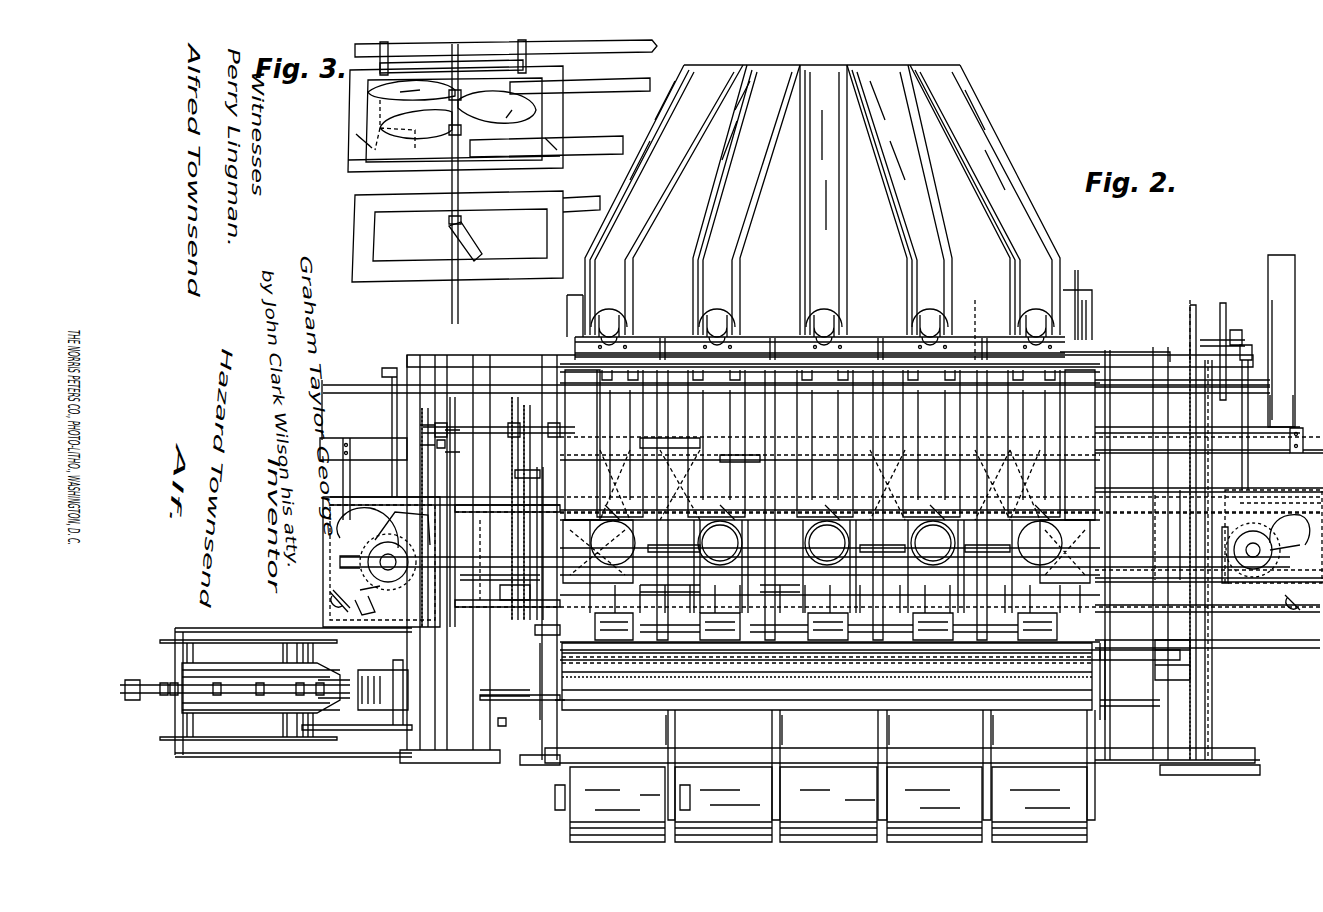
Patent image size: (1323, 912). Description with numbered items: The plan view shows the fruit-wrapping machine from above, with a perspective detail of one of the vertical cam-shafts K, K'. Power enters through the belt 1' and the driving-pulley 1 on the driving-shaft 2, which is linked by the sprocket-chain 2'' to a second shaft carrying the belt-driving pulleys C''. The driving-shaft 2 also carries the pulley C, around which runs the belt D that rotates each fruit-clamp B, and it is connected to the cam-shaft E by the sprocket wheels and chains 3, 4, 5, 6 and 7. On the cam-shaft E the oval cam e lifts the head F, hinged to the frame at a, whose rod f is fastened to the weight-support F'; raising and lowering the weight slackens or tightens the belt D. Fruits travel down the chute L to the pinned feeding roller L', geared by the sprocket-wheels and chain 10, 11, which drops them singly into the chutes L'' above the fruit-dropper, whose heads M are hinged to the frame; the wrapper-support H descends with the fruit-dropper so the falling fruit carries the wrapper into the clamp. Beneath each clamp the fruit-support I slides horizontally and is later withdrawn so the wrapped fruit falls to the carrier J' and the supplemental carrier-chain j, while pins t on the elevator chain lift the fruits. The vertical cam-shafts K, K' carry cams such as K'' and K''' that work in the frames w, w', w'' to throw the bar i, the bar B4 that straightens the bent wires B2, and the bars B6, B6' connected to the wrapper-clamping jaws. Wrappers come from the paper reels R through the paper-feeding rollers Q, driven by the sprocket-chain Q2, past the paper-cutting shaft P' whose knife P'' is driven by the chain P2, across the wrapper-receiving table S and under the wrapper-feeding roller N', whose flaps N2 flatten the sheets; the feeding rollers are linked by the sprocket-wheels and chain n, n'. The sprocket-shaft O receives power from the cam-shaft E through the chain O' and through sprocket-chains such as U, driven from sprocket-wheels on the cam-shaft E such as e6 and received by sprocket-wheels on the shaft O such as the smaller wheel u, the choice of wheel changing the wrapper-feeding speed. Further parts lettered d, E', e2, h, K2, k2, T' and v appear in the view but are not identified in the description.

In FIG. 2, the driving-pulley 1 is at (1306, 399).
In FIG. 2, the belt 1' is at (1281, 341).
In FIG. 2, the driving-shaft 2 is at (1195, 390).
In FIG. 2, the sprocket-chain 2'' is at (1210, 784).
In FIG. 2, the sprocket wheel or chain 3 is at (1228, 385).
In FIG. 2, the sprocket wheel or chain 4 is at (1228, 367).
In FIG. 2, the sprocket wheel or chain 5 is at (1225, 318).
In FIG. 2, the sprocket-wheel 6 is at (1080, 570).
In FIG. 2, the sprocket wheel or chain 7 is at (1190, 468).
In FIG. 2, the sprocket-wheel 10 is at (1090, 312).
In FIG. 2, the sprocket-wheel 11 is at (1084, 310).
In FIG. 2, the hinge a is at (480, 354).
In FIG. 2, the bracket d is at (1095, 355).
In FIG. 2, the fruit-clamp B is at (830, 551).
In FIG. 2, the wrapper-clamping member B2 is at (682, 446).
In FIG. 3, the movable wire-support bar B4 is at (657, 46).
In FIG. 2, the movable wire-support bar B4 is at (363, 450).
In FIG. 3, the movable bar B6 is at (580, 78).
In FIG. 2, the movable bar B6 is at (887, 559).
In FIG. 3, the movable bar B6' is at (546, 138).
In FIG. 2, the pulley C is at (801, 505).
In FIG. 2, the belt-driving pulley C'' is at (898, 765).
In FIG. 2, the belt D is at (1118, 478).
In FIG. 2, the cam-shaft E is at (365, 562).
In FIG. 2, the casing E' is at (1134, 537).
In FIG. 2, the weight-supporting cam e is at (802, 557).
In FIG. 2, the arm e2 is at (340, 545).
In FIG. 2, the sprocket-wheel e6 is at (500, 590).
In FIG. 2, the weight-support head F is at (775, 556).
In FIG. 2, the weight-support F' is at (813, 600).
In FIG. 2, the rod f is at (830, 713).
In FIG. 2, the wrapper-support H is at (854, 539).
In FIG. 2, the link h is at (827, 524).
In FIG. 2, the fruit-support I is at (820, 485).
In FIG. 3, the bar i is at (575, 212).
In FIG. 2, the carrier J' is at (383, 690).
In FIG. 2, the supplemental carrier-chain j is at (365, 730).
In FIG. 3, the vertical cam-shaft K is at (459, 184).
In FIG. 3, the vertical cam-shaft K' is at (416, 124).
In FIG. 2, the vertical cam-shaft K' is at (317, 601).
In FIG. 3, the cam K'' is at (497, 107).
In FIG. 2, the cam K'' is at (1251, 534).
In FIG. 3, the cam K''' is at (411, 85).
In FIG. 2, the cam K''' is at (374, 525).
In FIG. 2, the bevel gear K2 is at (375, 537).
In FIG. 2, the gear k2 is at (1243, 602).
In FIG. 2, the chute L is at (822, 200).
In FIG. 2, the fruit-feeding roller L' is at (822, 322).
In FIG. 2, the chute L'' is at (830, 443).
In FIG. 2, the fruit-dropper head M is at (830, 445).
In FIG. 2, the wrapper-feeding roller N' is at (740, 463).
In FIG. 2, the flap N2 is at (830, 622).
In FIG. 2, the sprocket-wheel n is at (534, 642).
In FIG. 2, the sprocket-wheel n' is at (546, 492).
In FIG. 2, the sprocket-shaft O is at (499, 420).
In FIG. 2, the sprocket-chain O' is at (423, 456).
In FIG. 2, the paper-cutting shaft P' is at (1140, 639).
In FIG. 2, the paper-cutting knife P'' is at (900, 731).
In FIG. 2, the sprocket-chain P2 is at (1252, 498).
In FIG. 2, the paper-feeding roller Q is at (625, 695).
In FIG. 2, the sprocket-chain Q2 is at (450, 480).
In FIG. 2, the paper reel R is at (828, 804).
In FIG. 2, the wrapper-receiving table S is at (847, 598).
In FIG. 2, the frame T' is at (286, 705).
In FIG. 2, the pin t is at (268, 680).
In FIG. 2, the sprocket-chain U is at (500, 400).
In FIG. 2, the sprocket-wheel u is at (825, 487).
In FIG. 2, the pin v is at (695, 796).
In FIG. 3, the frame w is at (457, 236).
In FIG. 2, the frame w is at (367, 607).
In FIG. 3, the frame w' is at (454, 158).
In FIG. 3, the frame w'' is at (455, 119).